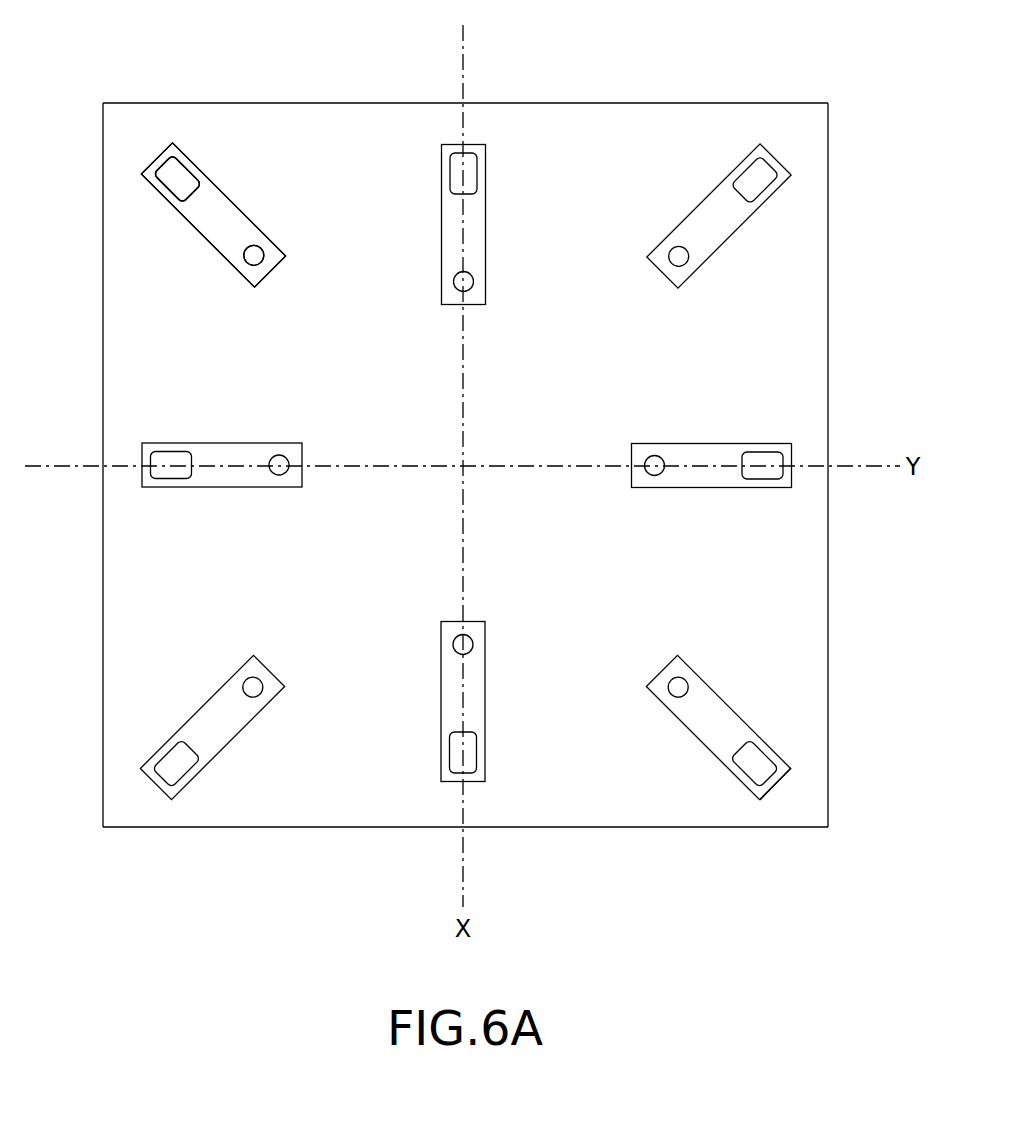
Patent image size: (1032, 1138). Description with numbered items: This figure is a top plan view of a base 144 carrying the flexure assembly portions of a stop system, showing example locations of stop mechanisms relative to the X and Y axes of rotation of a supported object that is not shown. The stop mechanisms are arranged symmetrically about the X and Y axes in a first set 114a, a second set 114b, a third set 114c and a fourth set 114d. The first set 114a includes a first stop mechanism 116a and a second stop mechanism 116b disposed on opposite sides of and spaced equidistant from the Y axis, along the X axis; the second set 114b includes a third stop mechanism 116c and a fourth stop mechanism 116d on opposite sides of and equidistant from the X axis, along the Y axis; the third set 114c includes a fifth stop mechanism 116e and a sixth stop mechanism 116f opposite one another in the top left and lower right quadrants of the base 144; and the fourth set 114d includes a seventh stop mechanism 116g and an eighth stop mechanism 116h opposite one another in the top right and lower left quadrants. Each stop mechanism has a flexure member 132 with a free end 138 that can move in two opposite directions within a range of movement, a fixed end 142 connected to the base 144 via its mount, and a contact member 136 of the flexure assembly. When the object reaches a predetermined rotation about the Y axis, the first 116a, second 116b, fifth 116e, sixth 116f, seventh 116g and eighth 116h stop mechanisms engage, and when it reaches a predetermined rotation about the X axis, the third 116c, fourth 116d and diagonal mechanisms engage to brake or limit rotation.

The first set of stop mechanisms 114a is at (445, 795).
The second set of stop mechanisms 114b is at (800, 452).
The third set of stop mechanisms 114c is at (137, 147).
The fourth set of stop mechanisms 114d is at (148, 793).
The first stop mechanism 116a is at (485, 245).
The second stop mechanism 116b is at (485, 678).
The third stop mechanism 116c is at (233, 443).
The fourth stop mechanism 116d is at (699, 443).
The fifth stop mechanism 116e is at (208, 178).
The sixth stop mechanism 116f is at (703, 680).
The seventh stop mechanism 116g is at (705, 200).
The eighth stop mechanism 116h is at (230, 740).
The flexure member 132 is at (230, 213).
The contact member 136 is at (175, 172).
The free end 138 is at (158, 188).
The fixed end 142 is at (267, 270).
The base 144 is at (775, 795).